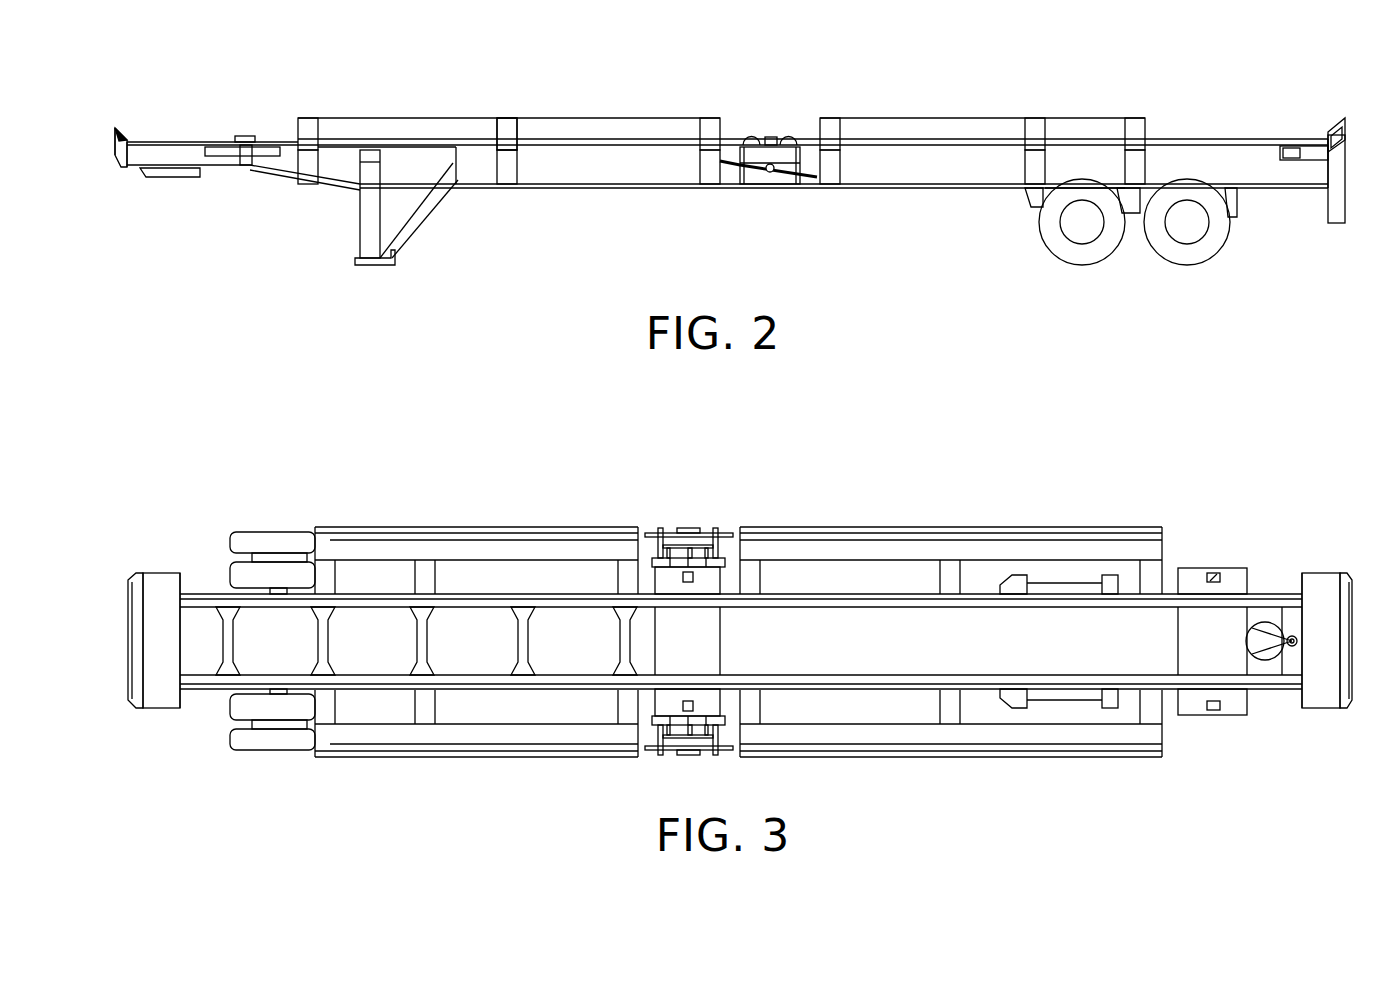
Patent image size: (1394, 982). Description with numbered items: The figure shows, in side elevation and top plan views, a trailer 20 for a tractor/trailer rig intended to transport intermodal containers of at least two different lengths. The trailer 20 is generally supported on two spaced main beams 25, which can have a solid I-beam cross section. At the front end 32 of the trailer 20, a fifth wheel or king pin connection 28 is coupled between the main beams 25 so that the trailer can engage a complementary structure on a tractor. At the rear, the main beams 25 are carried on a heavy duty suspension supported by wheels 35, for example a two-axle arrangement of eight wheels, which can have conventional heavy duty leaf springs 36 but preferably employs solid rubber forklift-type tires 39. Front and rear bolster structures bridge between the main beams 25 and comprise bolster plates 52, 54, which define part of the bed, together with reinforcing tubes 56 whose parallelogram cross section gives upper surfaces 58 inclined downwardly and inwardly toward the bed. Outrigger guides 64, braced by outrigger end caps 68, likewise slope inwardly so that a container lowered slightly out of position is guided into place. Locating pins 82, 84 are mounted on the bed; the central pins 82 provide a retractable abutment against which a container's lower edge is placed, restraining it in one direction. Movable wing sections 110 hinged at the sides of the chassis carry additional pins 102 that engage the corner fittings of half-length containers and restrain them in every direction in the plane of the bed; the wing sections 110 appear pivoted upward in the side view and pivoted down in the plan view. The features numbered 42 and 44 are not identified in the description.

In FIG. 2, the trailer 20 is at (960, 112).
In FIG. 2, the main beams 25 is at (600, 176).
In FIG. 2, the fifth wheel or king pin connection 28 is at (170, 190).
In FIG. 3, the fifth wheel or king pin connection 28 is at (1281, 646).
In FIG. 2, the front end 32 is at (114, 153).
In FIG. 3, the front end 32 is at (1298, 565).
In FIG. 2, the wheels 35 is at (1062, 236).
In FIG. 3, the wheels 35 is at (274, 541).
In FIG. 2, the leaf springs 36 is at (1157, 184).
In FIG. 2, the solid rubber forklift-type tires 39 is at (1184, 258).
In FIG. 3, the cross member 42 is at (325, 647).
In FIG. 2, the tandem axle assembly 44 is at (1242, 243).
In FIG. 2, the bolster plate 52 is at (263, 150).
In FIG. 3, the bolster plate 52 is at (1190, 707).
In FIG. 2, the bolster plate 54 is at (1306, 143).
In FIG. 3, the bolster plate 54 is at (178, 578).
In FIG. 2, the reinforcing tubes 56 is at (116, 138).
In FIG. 3, the reinforcing tubes 56 is at (140, 577).
In FIG. 2, the upper surfaces 58 is at (124, 132).
In FIG. 2, the outrigger guides 64 is at (578, 123).
In FIG. 2, the outrigger end caps 68 is at (712, 123).
In FIG. 2, the locating pin 82 is at (773, 137).
In FIG. 3, the locating pin 82 is at (683, 577).
In FIG. 2, the locating pin 84 is at (242, 136).
In FIG. 3, the locating pin 84 is at (1215, 572).
In FIG. 2, the additional pin 102 is at (752, 137).
In FIG. 2, the movable wing section 110 is at (775, 200).
In FIG. 3, the movable wing section 110 is at (700, 528).